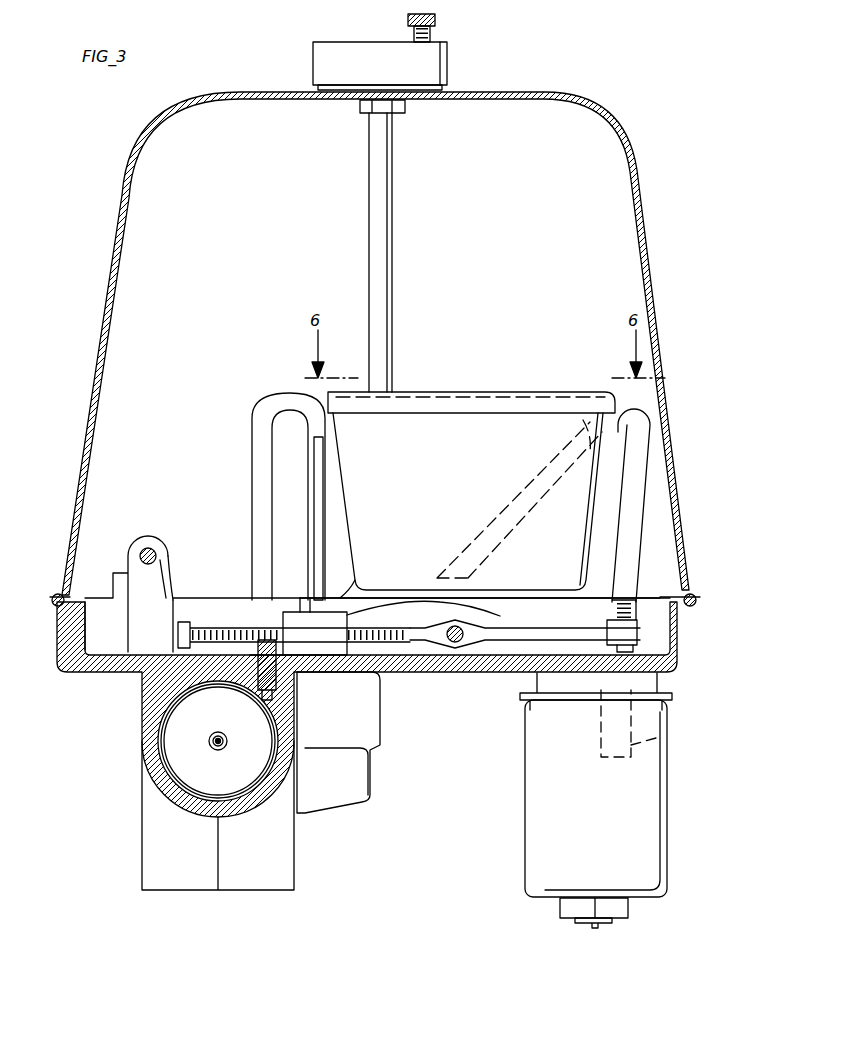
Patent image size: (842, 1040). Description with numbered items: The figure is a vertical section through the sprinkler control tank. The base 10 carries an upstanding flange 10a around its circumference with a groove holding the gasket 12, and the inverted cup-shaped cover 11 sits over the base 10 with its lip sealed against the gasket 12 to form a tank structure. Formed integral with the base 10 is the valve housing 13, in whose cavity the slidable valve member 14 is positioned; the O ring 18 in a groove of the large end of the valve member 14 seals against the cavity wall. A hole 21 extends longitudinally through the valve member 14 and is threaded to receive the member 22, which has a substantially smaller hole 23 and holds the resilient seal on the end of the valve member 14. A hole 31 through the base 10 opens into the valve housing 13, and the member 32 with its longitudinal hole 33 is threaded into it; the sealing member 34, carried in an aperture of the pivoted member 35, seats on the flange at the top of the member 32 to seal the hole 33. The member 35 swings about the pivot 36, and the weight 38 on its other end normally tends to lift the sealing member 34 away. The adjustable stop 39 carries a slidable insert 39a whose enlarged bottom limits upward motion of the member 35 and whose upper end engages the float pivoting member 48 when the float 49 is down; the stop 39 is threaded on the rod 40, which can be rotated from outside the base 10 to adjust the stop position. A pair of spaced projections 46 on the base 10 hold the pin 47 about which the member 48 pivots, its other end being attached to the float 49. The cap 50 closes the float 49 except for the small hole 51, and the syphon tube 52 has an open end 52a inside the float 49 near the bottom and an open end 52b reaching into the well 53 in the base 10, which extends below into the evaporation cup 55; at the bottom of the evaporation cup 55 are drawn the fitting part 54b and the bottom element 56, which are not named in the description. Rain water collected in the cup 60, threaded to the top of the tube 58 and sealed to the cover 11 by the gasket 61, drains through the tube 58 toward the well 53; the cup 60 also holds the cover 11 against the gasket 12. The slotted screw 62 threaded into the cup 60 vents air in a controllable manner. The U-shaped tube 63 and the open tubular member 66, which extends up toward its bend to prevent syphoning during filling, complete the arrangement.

The base 10 is at (100, 666).
The upstanding flange 10a is at (78, 628).
The inverted cup-shaped cover 11 is at (82, 522).
The gasket 12 is at (52, 601).
The valve housing 13 is at (150, 760).
The slidable valve member 14 is at (232, 785).
The O ring 18 is at (150, 738).
The hole 21 is at (227, 741).
The member 22 is at (220, 738).
The small hole 23 is at (215, 736).
The hole 31 is at (274, 692).
The member 32 is at (276, 664).
The longitudinal hole 33 is at (276, 680).
The sealing member 34 is at (260, 626).
The pivoted member 35 is at (283, 612).
The pivot 36 is at (455, 645).
The weight 38 is at (608, 641).
The adjustable stop 39 is at (352, 650).
The slidable insert 39a is at (386, 710).
The rod 40 is at (206, 624).
The spaced projections 46 is at (147, 536).
The pin 47 is at (140, 552).
The float pivoting member 48 is at (172, 552).
The float 49 is at (420, 548).
The cap 50 is at (462, 391).
The small hole 51 is at (598, 392).
The syphon tube 52 is at (652, 422).
The open end of syphon tube 52a is at (462, 562).
The open end of syphon tube 52b is at (660, 735).
The well 53 is at (668, 692).
The cup bottom 54b is at (560, 901).
The evaporation cup 55 is at (656, 822).
The cup base plate 56 is at (620, 910).
The tube 58 is at (394, 274).
The cup 60 is at (325, 57).
The gasket 61 is at (446, 90).
The slotted screw 62 is at (437, 20).
The U-shaped tube 63 is at (264, 442).
The tubular member 66 is at (322, 496).